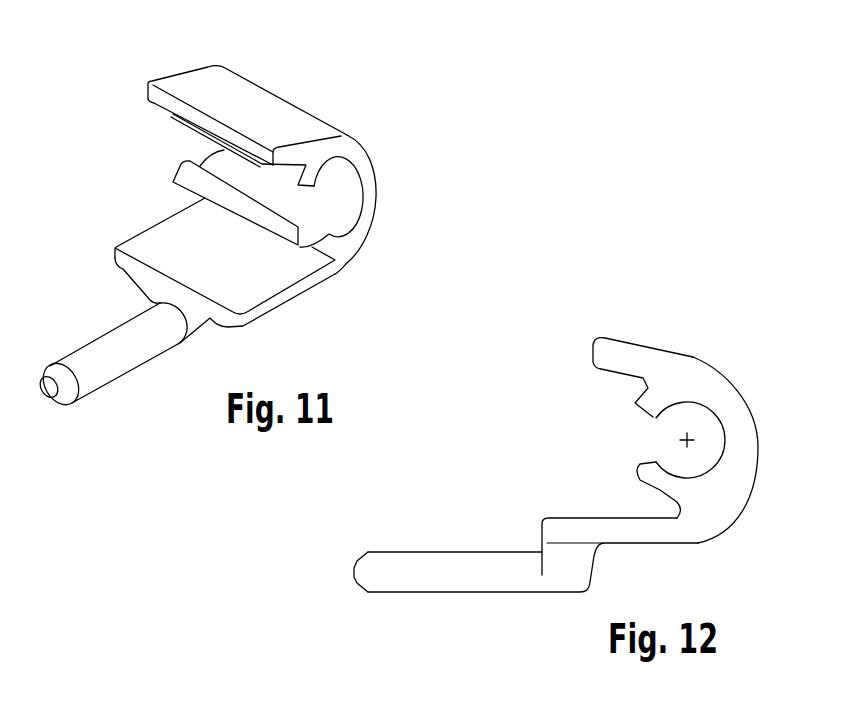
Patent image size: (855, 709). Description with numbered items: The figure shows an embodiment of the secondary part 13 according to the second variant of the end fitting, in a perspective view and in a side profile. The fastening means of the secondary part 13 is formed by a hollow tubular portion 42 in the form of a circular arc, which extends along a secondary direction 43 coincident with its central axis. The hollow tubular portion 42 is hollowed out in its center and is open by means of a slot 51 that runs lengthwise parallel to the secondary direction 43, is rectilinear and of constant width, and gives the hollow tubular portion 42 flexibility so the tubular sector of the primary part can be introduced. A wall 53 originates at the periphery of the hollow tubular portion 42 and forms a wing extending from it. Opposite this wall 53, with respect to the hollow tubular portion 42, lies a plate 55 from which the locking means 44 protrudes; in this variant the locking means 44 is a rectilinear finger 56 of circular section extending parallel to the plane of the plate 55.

In FIG. 11, the secondary part 13 is at (351, 105).
In FIG. 12, the secondary part 13 is at (707, 344).
In FIG. 11, the hollow tubular portion 42 is at (370, 193).
In FIG. 12, the hollow tubular portion 42 is at (727, 410).
In FIG. 12, the secondary direction 43 is at (684, 440).
In FIG. 11, the locking means 44 is at (174, 360).
In FIG. 12, the locking means 44 is at (428, 540).
In FIG. 11, the slot 51 is at (198, 147).
In FIG. 12, the slot 51 is at (643, 447).
In FIG. 11, the wall 53 is at (193, 92).
In FIG. 12, the wall 53 is at (613, 358).
In FIG. 11, the plate 55 is at (268, 272).
In FIG. 12, the plate 55 is at (625, 530).
In FIG. 11, the finger 56 is at (102, 360).
In FIG. 12, the finger 56 is at (458, 568).